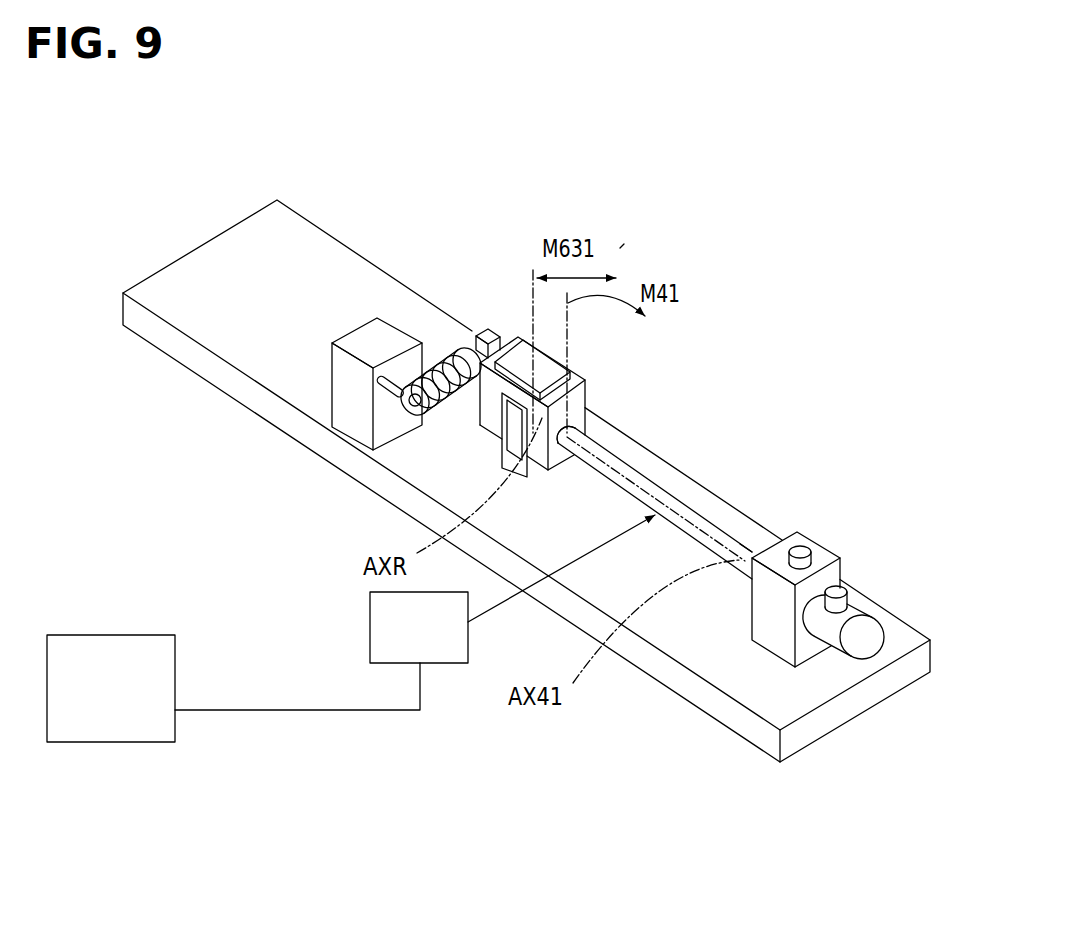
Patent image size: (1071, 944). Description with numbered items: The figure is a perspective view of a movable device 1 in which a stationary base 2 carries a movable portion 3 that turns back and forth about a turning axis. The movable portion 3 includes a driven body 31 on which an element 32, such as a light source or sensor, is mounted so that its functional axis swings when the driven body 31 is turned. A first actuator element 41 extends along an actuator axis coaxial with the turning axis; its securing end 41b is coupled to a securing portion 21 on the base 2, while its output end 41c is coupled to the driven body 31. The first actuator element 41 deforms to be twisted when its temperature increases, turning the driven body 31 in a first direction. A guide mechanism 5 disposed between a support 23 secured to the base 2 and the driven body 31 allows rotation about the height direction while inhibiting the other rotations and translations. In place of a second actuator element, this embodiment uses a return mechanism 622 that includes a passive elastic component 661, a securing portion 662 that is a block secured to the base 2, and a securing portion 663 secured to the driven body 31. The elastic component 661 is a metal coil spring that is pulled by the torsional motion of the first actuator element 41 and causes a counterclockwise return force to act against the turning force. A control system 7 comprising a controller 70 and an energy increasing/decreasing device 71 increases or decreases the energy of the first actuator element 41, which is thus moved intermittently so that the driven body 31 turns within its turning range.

The movable device 1 is at (624, 244).
The base 2 is at (880, 566).
The securing portion 21 is at (840, 530).
The support 23 is at (505, 464).
The movable portion 3 is at (595, 393).
The driven body 31 is at (588, 385).
The element 32 is at (542, 345).
The first actuator element 41 is at (672, 484).
The securing end 41b is at (754, 556).
The output end 41c is at (600, 417).
The guide mechanism 5 is at (339, 351).
The return mechanism 622 is at (382, 306).
The elastic component 661 is at (452, 346).
The securing portion 662 is at (345, 397).
The securing portion 663 is at (497, 338).
The control system 7 is at (346, 609).
The controller 70 is at (115, 634).
The energy increasing/decreasing device 71 is at (370, 638).